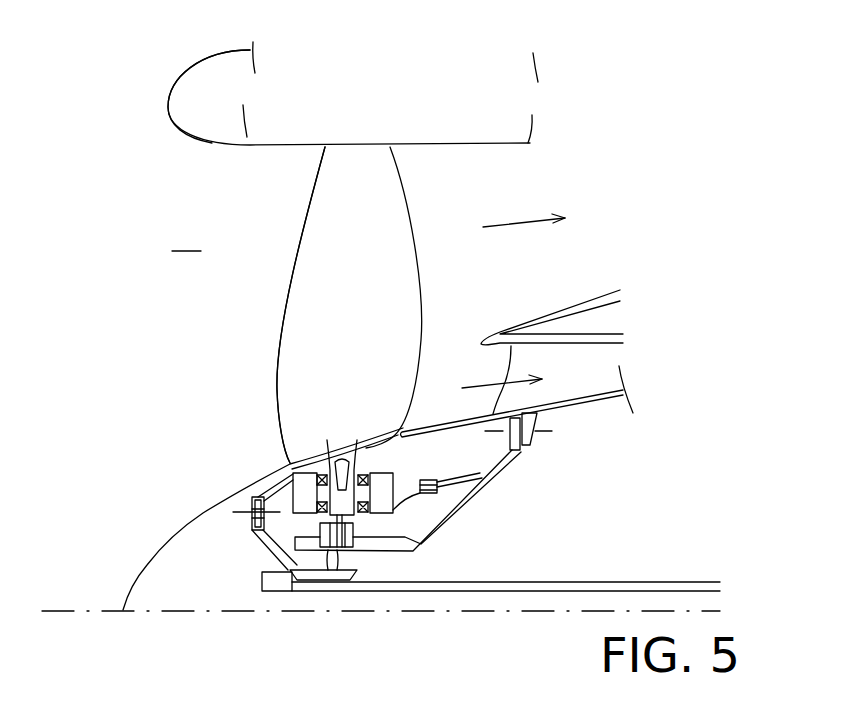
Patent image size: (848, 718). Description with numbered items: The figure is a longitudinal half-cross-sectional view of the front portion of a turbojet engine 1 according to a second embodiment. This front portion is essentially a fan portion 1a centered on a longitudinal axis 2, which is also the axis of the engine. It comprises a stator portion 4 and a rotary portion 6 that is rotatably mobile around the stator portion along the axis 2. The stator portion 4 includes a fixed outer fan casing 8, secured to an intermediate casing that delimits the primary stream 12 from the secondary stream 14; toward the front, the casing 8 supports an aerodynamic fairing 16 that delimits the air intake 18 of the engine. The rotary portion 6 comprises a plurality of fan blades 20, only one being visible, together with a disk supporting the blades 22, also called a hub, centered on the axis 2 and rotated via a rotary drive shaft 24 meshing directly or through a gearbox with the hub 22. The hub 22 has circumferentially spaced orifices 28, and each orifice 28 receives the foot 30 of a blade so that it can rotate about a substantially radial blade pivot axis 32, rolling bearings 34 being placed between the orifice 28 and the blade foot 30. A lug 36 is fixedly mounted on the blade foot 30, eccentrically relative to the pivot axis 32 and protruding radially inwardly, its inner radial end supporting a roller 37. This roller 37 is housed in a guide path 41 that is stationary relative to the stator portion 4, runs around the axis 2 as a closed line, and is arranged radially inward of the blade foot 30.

The turbojet engine 1 is at (617, 112).
The fan portion 1a is at (357, 129).
The longitudinal axis 2 is at (53, 610).
The stator portion 4 is at (619, 412).
The rotary portion 6 is at (413, 216).
The fixed outer fan casing 8 is at (282, 148).
The primary stream 12 is at (480, 383).
The secondary stream 14 is at (512, 220).
The aerodynamic fairing 16 is at (200, 67).
The air intake 18 is at (186, 241).
The fan blade 20 is at (310, 250).
The disk supporting the blades 22 is at (265, 493).
The rotary drive shaft 24 is at (545, 592).
The orifice 28 is at (358, 448).
The blade foot 30 is at (333, 465).
The blade pivot axis 32 is at (343, 425).
The rolling bearings 34 is at (318, 505).
The lug 36 is at (332, 560).
The roller 37 is at (353, 530).
The guide path 41 is at (330, 560).